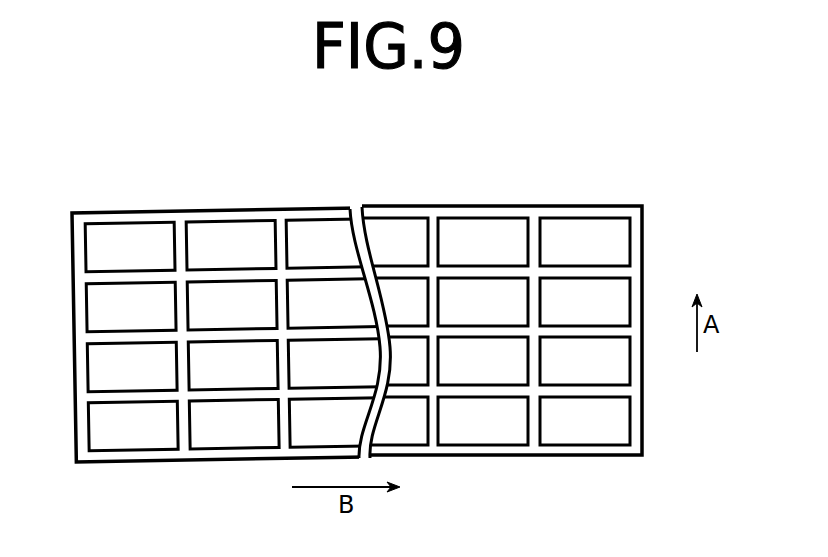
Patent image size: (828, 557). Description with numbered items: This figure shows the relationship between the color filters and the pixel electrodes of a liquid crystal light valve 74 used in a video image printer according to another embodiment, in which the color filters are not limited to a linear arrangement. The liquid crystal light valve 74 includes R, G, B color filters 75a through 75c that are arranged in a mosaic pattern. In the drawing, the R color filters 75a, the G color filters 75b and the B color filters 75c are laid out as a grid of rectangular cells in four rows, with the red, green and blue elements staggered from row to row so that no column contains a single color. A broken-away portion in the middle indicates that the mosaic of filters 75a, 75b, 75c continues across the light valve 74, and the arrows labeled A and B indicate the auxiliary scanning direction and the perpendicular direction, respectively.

The liquid crystal light valve 74 is at (441, 176).
The R color filter 75a is at (128, 230).
The G color filter 75b is at (233, 230).
The B color filter 75c is at (317, 230).